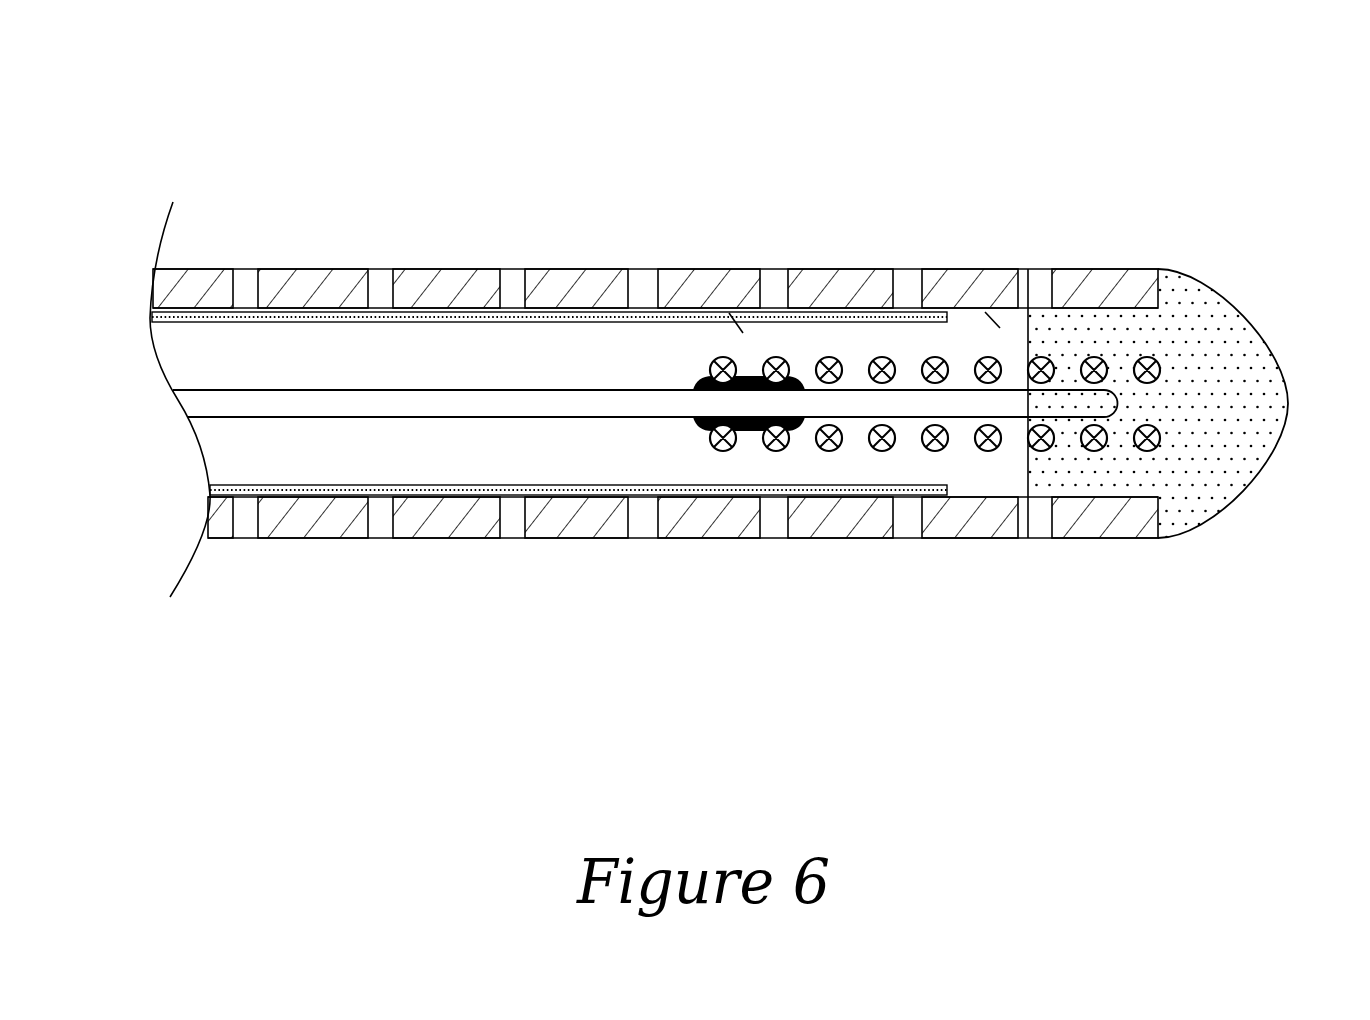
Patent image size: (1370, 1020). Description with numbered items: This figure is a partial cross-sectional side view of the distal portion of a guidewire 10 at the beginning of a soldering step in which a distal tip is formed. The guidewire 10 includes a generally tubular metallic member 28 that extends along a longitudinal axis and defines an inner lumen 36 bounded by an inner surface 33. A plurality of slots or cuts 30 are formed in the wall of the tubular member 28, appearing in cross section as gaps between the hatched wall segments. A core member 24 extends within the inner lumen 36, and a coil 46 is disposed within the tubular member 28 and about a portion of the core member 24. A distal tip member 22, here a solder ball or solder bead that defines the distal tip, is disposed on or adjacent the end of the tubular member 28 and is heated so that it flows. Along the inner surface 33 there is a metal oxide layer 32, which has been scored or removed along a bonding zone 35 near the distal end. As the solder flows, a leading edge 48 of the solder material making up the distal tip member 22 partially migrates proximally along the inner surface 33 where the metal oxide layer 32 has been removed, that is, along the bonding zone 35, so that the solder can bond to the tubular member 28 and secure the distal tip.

The guidewire 10 is at (438, 128).
The distal tip member 22 is at (1217, 313).
The core member 24 is at (640, 403).
The tubular member 28 is at (568, 287).
The slots or cuts 30 is at (380, 287).
The metal oxide layer 32 is at (703, 313).
The inner surface 33 is at (743, 333).
The bonding zone 35 is at (1000, 328).
The inner lumen 36 is at (502, 455).
The coil 46 is at (832, 367).
The leading edge of solder 48 is at (1023, 476).